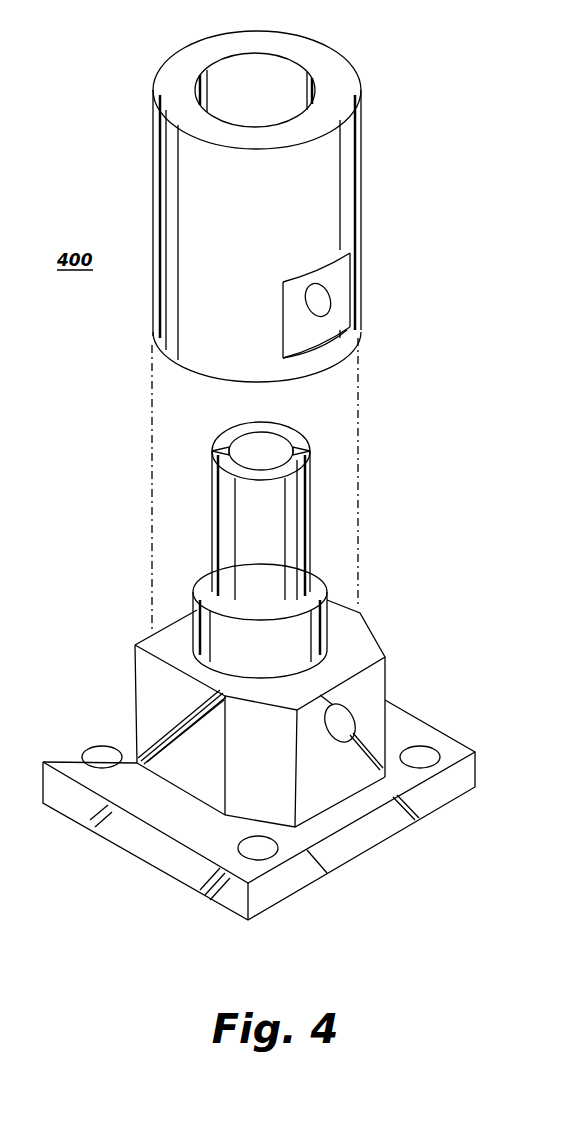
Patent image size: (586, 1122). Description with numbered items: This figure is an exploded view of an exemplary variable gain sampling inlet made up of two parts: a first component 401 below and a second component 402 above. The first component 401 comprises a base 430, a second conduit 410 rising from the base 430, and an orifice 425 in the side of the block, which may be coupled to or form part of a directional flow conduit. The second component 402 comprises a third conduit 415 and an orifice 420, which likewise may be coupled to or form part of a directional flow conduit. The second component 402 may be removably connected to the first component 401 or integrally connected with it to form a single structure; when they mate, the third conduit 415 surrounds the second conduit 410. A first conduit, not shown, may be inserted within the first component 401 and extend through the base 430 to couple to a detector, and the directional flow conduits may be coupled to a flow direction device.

The first component 401 is at (373, 677).
The second component 402 is at (343, 187).
The second conduit 410 is at (272, 448).
The third conduit 415 is at (283, 90).
The orifice 420 is at (318, 300).
The orifice 425 is at (337, 725).
The base 430 is at (373, 833).